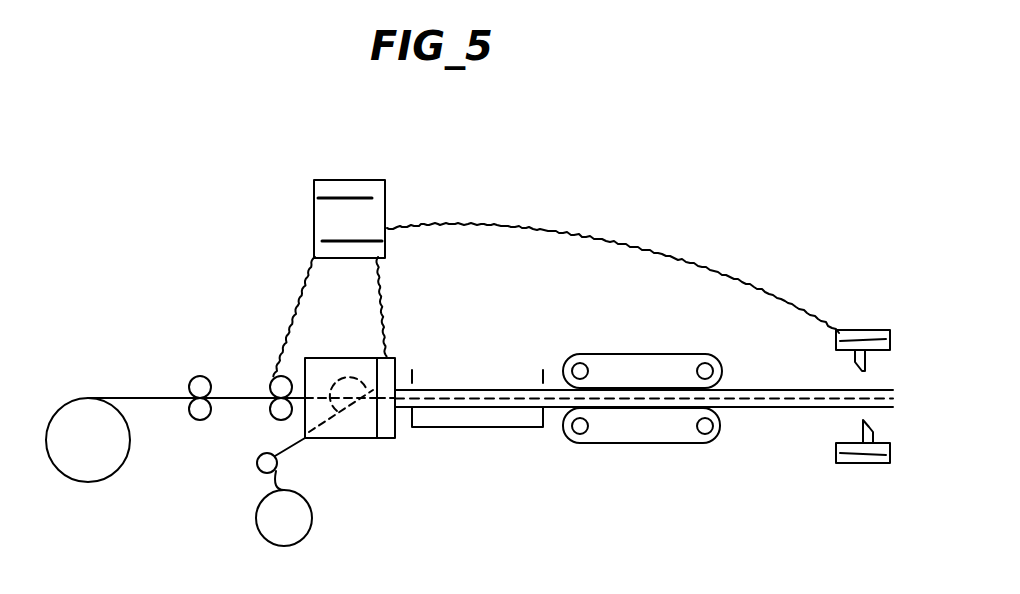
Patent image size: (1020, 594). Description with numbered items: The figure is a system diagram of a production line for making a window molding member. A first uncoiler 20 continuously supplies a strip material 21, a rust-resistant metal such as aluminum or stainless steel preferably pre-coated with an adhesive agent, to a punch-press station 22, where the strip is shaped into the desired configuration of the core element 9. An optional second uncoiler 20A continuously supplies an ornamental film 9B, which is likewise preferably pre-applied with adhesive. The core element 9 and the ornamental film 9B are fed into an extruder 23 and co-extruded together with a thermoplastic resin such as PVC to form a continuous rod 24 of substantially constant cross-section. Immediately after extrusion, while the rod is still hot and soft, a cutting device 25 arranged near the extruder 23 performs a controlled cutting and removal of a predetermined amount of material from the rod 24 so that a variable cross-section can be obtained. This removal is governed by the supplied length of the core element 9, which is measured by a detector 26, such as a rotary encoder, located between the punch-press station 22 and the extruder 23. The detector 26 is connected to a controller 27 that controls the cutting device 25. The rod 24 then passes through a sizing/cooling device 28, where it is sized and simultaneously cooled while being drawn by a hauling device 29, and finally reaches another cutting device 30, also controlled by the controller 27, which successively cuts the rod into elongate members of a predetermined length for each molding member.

The core element 9 is at (233, 400).
The ornamental film 9B is at (290, 441).
The first uncoiler 20 is at (124, 462).
The second uncoiler 20A is at (312, 517).
The strip material 21 is at (133, 396).
The punch-press station 22 is at (197, 376).
The extruder 23 is at (353, 439).
The continuous rod 24 is at (402, 388).
The cutting device 25 is at (390, 439).
The detector 26 is at (272, 378).
The controller 27 is at (388, 192).
The sizing/cooling device 28 is at (508, 428).
The hauling device 29 is at (625, 444).
The cutting device 30 is at (870, 338).